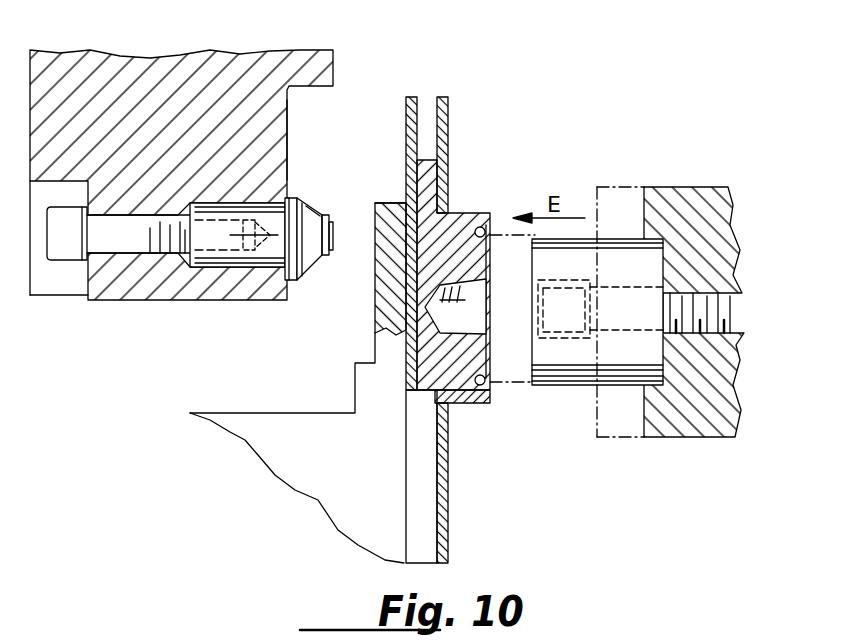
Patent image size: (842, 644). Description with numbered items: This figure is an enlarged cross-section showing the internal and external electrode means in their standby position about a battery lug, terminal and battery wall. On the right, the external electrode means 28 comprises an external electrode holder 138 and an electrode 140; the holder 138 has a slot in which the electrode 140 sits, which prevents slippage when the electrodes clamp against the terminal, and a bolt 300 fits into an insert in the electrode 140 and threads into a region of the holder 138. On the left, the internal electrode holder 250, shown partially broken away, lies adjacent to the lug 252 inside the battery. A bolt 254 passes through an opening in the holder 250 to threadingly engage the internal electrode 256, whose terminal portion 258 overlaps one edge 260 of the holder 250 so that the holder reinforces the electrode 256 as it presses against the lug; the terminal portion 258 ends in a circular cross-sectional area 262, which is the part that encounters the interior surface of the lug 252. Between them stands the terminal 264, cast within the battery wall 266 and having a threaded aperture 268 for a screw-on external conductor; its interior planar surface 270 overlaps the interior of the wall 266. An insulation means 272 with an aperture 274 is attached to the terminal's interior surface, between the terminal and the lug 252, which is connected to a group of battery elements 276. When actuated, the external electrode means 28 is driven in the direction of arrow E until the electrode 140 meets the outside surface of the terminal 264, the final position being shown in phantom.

The external electrode means 28 is at (634, 452).
The external electrode holder 138 is at (693, 425).
The electrode 140 is at (555, 370).
The internal electrode holder 250 is at (285, 72).
The lug 252 is at (383, 310).
The bolt 254 is at (66, 247).
The internal electrode 256 is at (272, 213).
The terminal portion 258 is at (312, 275).
The edge 260 is at (289, 118).
The circular cross-sectional area 262 is at (332, 240).
The terminal 264 is at (453, 380).
The battery wall 266 is at (448, 522).
The threaded aperture 268 is at (455, 308).
The interior planar surface 270 is at (427, 163).
The insulation means 272 is at (412, 97).
The aperture 274 is at (398, 203).
The group of elements 276 is at (270, 432).
The bolt 300 is at (720, 305).